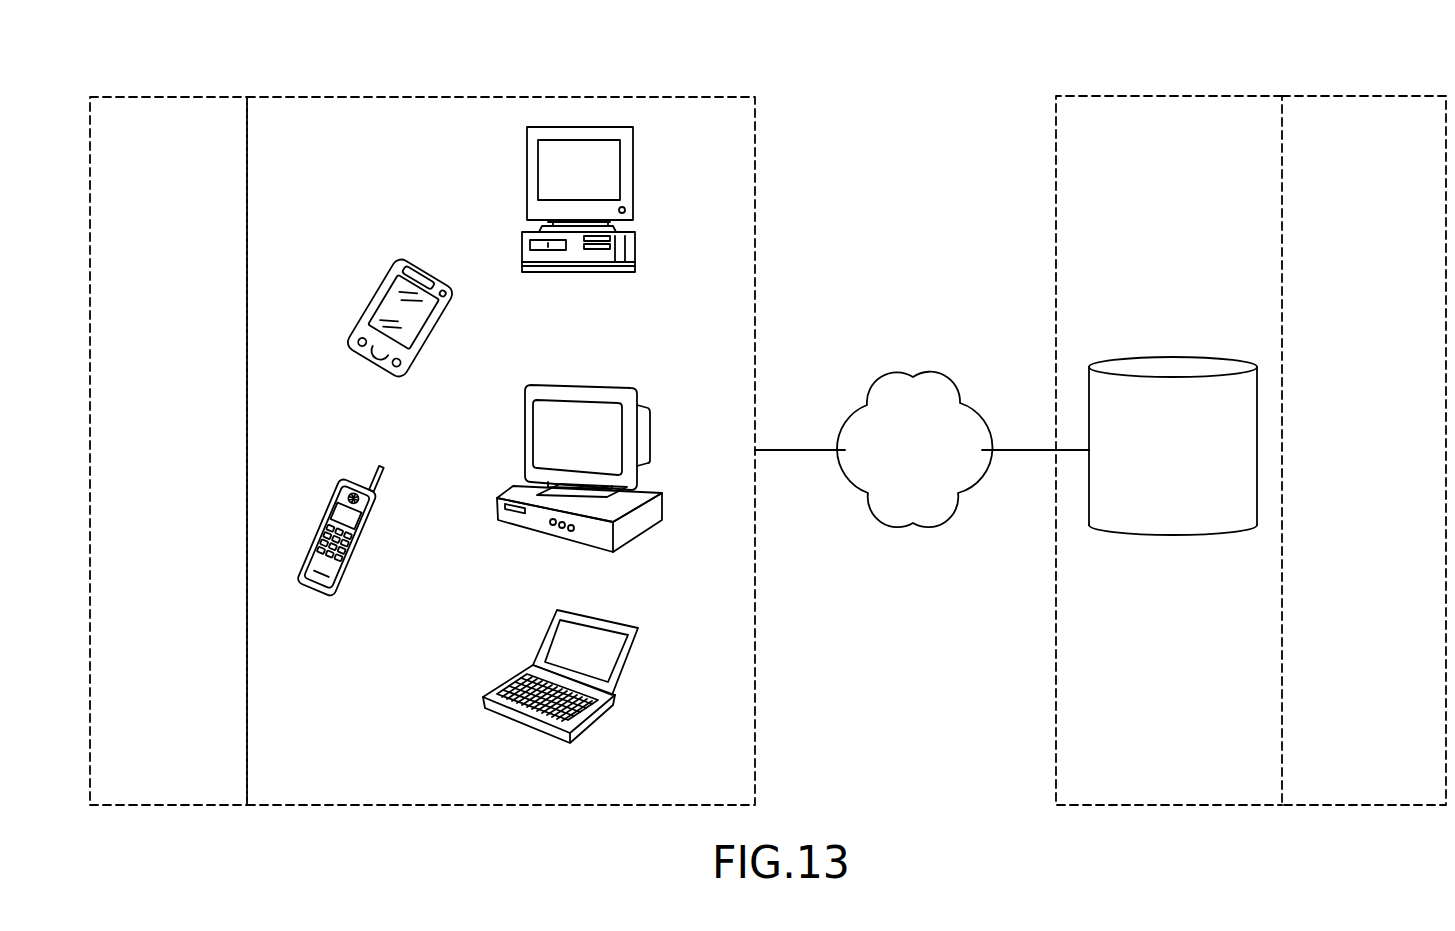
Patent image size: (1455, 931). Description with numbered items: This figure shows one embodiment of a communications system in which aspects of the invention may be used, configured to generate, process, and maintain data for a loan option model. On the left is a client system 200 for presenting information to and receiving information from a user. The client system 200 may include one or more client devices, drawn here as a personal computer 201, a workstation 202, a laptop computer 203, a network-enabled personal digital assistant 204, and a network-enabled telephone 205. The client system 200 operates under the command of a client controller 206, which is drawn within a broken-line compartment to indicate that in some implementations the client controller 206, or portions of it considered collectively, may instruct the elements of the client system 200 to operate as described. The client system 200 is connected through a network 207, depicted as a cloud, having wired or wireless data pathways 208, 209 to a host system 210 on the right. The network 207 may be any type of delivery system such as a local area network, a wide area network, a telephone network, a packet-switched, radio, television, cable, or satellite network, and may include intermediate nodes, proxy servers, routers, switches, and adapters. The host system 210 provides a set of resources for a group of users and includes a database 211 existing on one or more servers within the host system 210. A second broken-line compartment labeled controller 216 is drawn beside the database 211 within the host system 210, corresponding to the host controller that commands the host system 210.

The client system 200 is at (630, 73).
The personal computer 201 is at (633, 165).
The workstation 202 is at (650, 435).
The laptop computer 203 is at (632, 658).
The network-enabled personal digital assistant 204 is at (430, 334).
The network-enabled telephone 205 is at (366, 540).
The client controller 206 is at (197, 96).
The network 207 is at (903, 318).
The data pathway 208 is at (805, 450).
The data pathway 209 is at (1007, 450).
The host system 210 is at (1262, 62).
The database 211 is at (1177, 534).
The controller 216 is at (1370, 96).